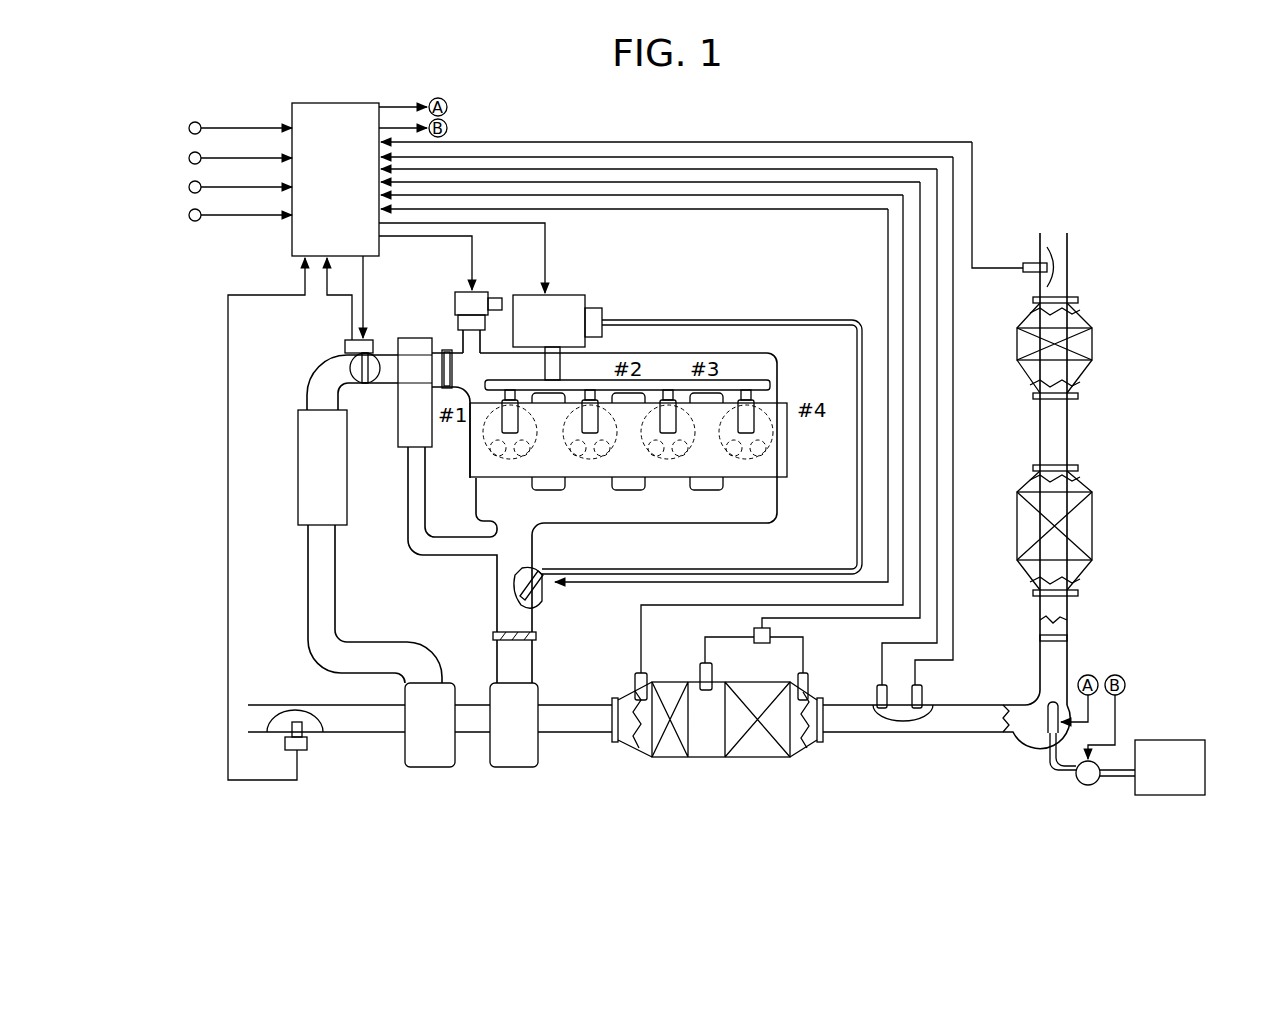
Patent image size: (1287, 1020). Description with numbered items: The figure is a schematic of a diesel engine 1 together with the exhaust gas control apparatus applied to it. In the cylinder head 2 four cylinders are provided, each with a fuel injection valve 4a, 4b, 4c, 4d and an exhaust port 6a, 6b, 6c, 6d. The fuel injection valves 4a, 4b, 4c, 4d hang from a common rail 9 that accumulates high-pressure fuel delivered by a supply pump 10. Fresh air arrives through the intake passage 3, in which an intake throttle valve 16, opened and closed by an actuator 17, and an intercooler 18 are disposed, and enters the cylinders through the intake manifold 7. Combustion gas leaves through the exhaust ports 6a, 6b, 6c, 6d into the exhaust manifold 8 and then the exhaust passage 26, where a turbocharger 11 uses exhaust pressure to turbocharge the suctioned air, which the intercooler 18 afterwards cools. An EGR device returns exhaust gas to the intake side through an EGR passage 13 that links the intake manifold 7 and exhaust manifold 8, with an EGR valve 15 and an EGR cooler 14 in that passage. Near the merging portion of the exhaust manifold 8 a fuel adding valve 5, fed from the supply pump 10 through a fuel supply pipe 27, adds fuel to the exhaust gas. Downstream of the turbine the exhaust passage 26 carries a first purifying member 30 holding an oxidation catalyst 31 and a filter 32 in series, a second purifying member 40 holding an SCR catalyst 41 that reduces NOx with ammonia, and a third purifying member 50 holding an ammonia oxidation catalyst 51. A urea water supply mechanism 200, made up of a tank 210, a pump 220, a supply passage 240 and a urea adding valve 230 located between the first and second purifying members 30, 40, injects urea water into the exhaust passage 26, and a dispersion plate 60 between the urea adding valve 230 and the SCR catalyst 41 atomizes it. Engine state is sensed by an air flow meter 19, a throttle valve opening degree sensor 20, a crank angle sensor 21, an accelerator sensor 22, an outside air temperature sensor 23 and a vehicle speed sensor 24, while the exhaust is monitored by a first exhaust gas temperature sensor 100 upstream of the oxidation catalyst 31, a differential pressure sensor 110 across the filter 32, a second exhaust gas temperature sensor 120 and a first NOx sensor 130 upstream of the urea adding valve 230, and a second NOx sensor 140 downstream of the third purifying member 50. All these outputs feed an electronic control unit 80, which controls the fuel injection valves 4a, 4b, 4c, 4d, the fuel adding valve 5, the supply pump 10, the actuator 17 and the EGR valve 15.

The engine 1 is at (789, 447).
The cylinder head 2 is at (470, 462).
The intake passage 3 is at (305, 403).
The fuel injection valve 4a is at (510, 390).
The fuel injection valve 4b is at (590, 390).
The fuel injection valve 4c is at (668, 390).
The fuel injection valve 4d is at (746, 390).
The fuel adding valve 5 is at (532, 606).
The exhaust port 6a is at (522, 470).
The exhaust port 6b is at (602, 470).
The exhaust port 6c is at (680, 470).
The exhaust port 6d is at (758, 470).
The intake manifold 7 is at (775, 383).
The exhaust manifold 8 is at (702, 523).
The common rail 9 is at (692, 353).
The supply pump 10 is at (566, 295).
The turbocharger 11 is at (472, 705).
The EGR passage 13 is at (408, 513).
The EGR cooler 14 is at (398, 428).
The EGR valve 15 is at (482, 292).
The intake throttle valve 16 is at (338, 372).
The actuator 17 is at (445, 349).
The intercooler 18 is at (298, 497).
The air flow meter 19 is at (307, 745).
The throttle valve opening degree sensor 20 is at (345, 346).
The crank angle sensor 21 is at (189, 128).
The accelerator sensor 22 is at (189, 158).
The outside air temperature sensor 23 is at (189, 187).
The vehicle speed sensor 24 is at (189, 215).
The exhaust passage 26 is at (533, 655).
The fuel supply pipe 27 is at (740, 320).
The first purifying member 30 is at (703, 760).
The oxidation catalyst 31 is at (670, 758).
The filter 32 is at (757, 758).
The second purifying member 40 is at (1094, 552).
The SCR catalyst 41 is at (1086, 515).
The third purifying member 50 is at (1085, 384).
The ammonia oxidation catalyst 51 is at (1092, 345).
The dispersion plate 60 is at (1067, 638).
The electronic control unit 80 is at (379, 256).
The first exhaust gas temperature sensor 100 is at (644, 674).
The differential pressure sensor 110 is at (762, 644).
The second exhaust gas temperature sensor 120 is at (877, 692).
The first NOx sensor 130 is at (925, 690).
The second NOx sensor 140 is at (1030, 262).
The urea water supply mechanism 200 is at (1180, 737).
The tank 210 is at (1205, 775).
The pump 220 is at (1090, 785).
The urea adding valve 230 is at (1048, 722).
The supply passage 240 is at (1050, 770).